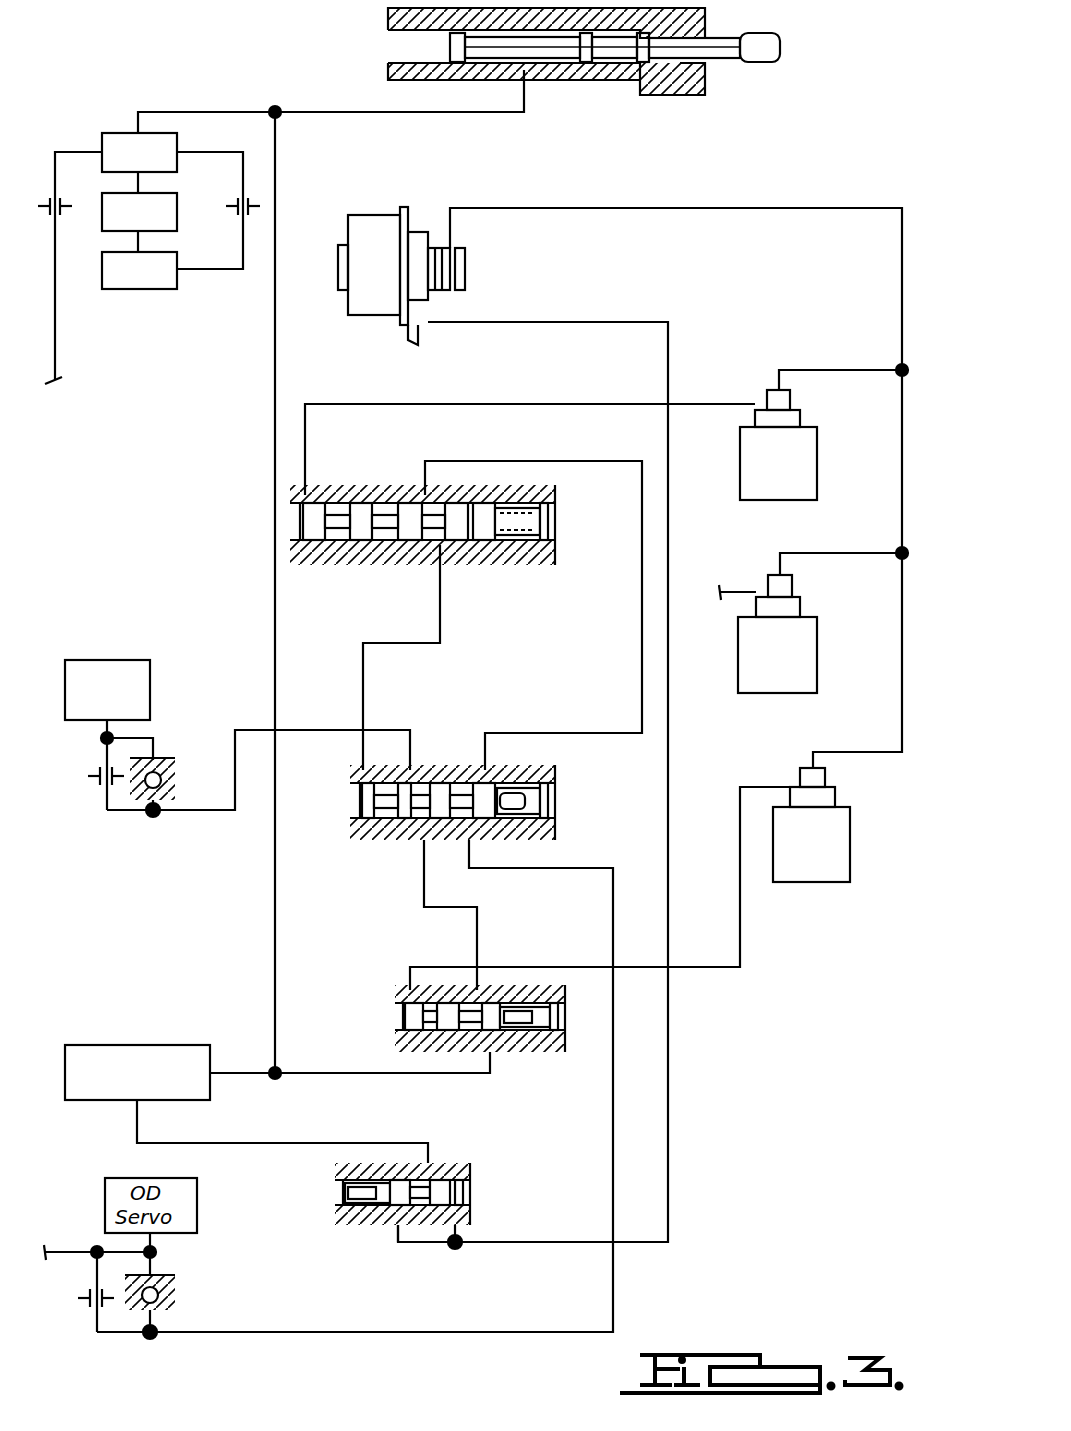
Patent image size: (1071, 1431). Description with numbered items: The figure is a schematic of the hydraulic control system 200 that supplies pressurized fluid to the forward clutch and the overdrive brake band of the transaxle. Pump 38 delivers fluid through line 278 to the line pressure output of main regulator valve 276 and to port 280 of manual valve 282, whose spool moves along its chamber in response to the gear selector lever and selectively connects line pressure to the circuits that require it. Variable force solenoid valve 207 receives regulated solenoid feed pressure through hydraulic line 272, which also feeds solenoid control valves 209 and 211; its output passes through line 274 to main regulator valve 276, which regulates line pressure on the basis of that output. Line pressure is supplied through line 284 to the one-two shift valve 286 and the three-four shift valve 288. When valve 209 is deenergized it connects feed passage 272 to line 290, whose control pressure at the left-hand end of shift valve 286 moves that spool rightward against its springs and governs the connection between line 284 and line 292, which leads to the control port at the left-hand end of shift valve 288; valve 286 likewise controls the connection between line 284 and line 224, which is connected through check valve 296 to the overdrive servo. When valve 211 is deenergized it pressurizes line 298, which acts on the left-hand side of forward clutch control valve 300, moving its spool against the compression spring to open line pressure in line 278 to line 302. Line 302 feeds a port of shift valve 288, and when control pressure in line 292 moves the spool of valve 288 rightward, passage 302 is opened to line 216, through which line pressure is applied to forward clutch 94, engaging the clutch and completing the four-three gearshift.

The pump 38 is at (115, 134).
The forward clutch 94 is at (104, 658).
The hydraulic control system 200 is at (850, 160).
The variable force solenoid valve 207 is at (366, 215).
The solenoid control valve 209 is at (808, 455).
The solenoid control valve 211 is at (828, 868).
The control line 216 is at (210, 812).
The control line 224 is at (602, 868).
The hydraulic line 272 is at (545, 210).
The line 274 is at (606, 322).
The main regulator valve 276 is at (166, 1038).
The line 278 is at (274, 405).
The port 280 is at (530, 70).
The manual valve 282 is at (362, 45).
The line 284 is at (588, 461).
The 1-2 shift valve 286 is at (574, 544).
The 3-4 shift valve 288 is at (580, 808).
The line 290 is at (705, 404).
The line 292 is at (446, 605).
The check valve 296 is at (170, 1300).
The line 298 is at (740, 945).
The forward clutch control valve 300 is at (385, 982).
The line 302 is at (480, 925).